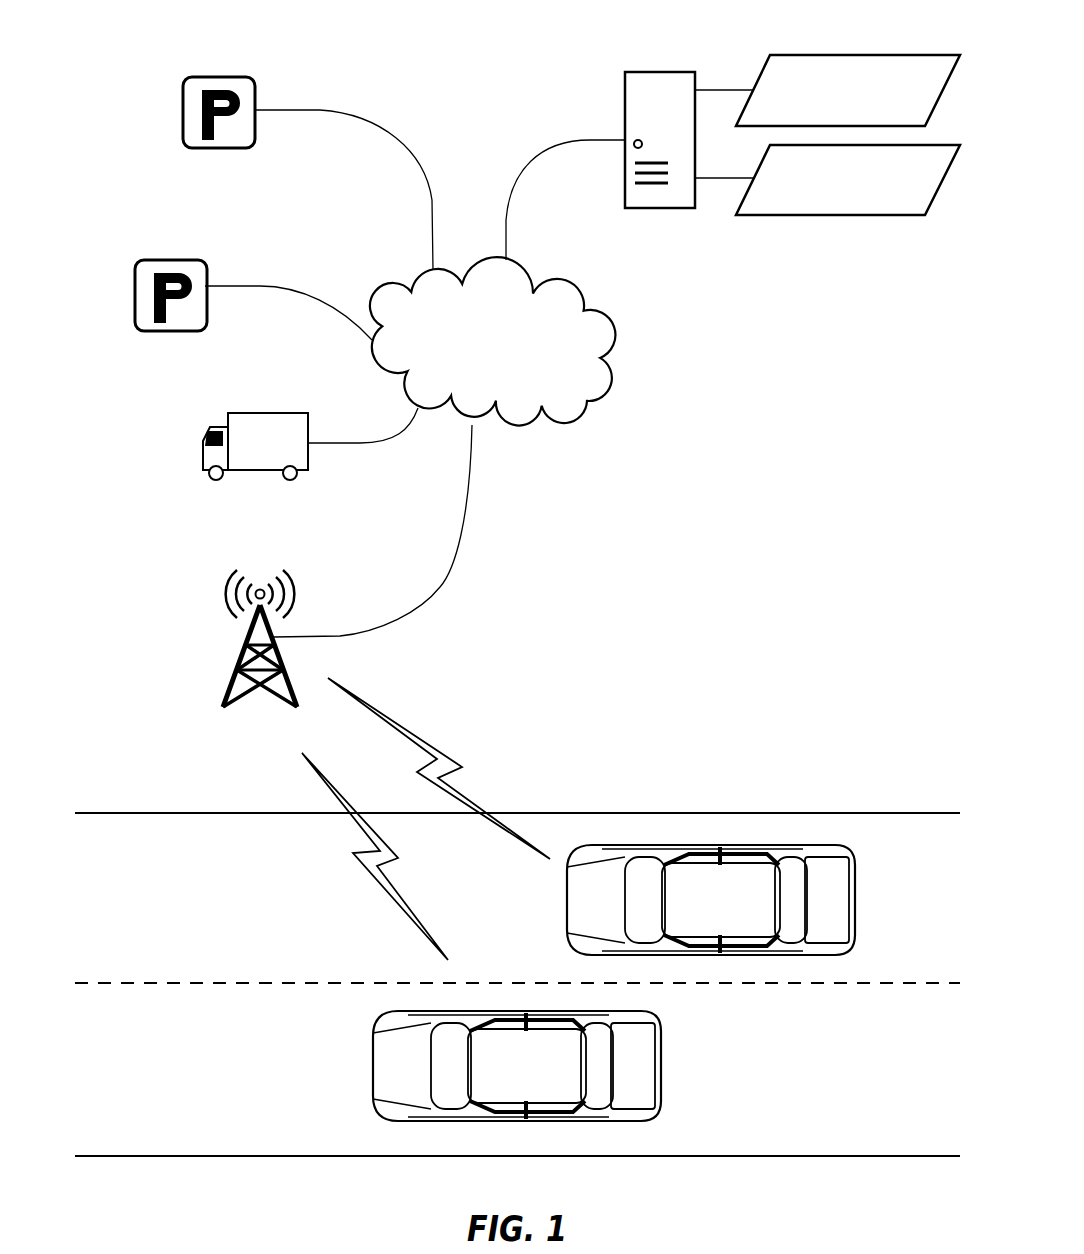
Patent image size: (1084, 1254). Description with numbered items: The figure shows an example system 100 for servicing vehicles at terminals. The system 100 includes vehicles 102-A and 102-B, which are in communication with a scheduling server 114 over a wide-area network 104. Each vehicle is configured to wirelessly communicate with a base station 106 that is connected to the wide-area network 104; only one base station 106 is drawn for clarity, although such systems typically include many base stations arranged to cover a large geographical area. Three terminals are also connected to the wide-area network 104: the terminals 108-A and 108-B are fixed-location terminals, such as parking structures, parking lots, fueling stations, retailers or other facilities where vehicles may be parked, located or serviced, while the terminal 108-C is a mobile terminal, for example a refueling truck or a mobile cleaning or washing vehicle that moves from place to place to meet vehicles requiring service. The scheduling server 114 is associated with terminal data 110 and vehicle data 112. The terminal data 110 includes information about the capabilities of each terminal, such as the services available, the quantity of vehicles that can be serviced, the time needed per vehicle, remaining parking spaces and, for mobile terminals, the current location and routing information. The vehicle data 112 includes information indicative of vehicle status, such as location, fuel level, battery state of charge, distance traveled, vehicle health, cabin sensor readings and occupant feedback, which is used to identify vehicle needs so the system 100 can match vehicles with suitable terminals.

The system 100 is at (158, 86).
The vehicle 102-A is at (711, 900).
The vehicle 102-B is at (517, 1066).
The wide-area network 104 is at (476, 374).
The base station 106 is at (244, 759).
The terminal 108-A is at (196, 214).
The terminal 108-B is at (144, 384).
The terminal 108-C is at (230, 529).
The terminal data 110 is at (832, 112).
The vehicle data 112 is at (832, 201).
The scheduling server 114 is at (644, 293).